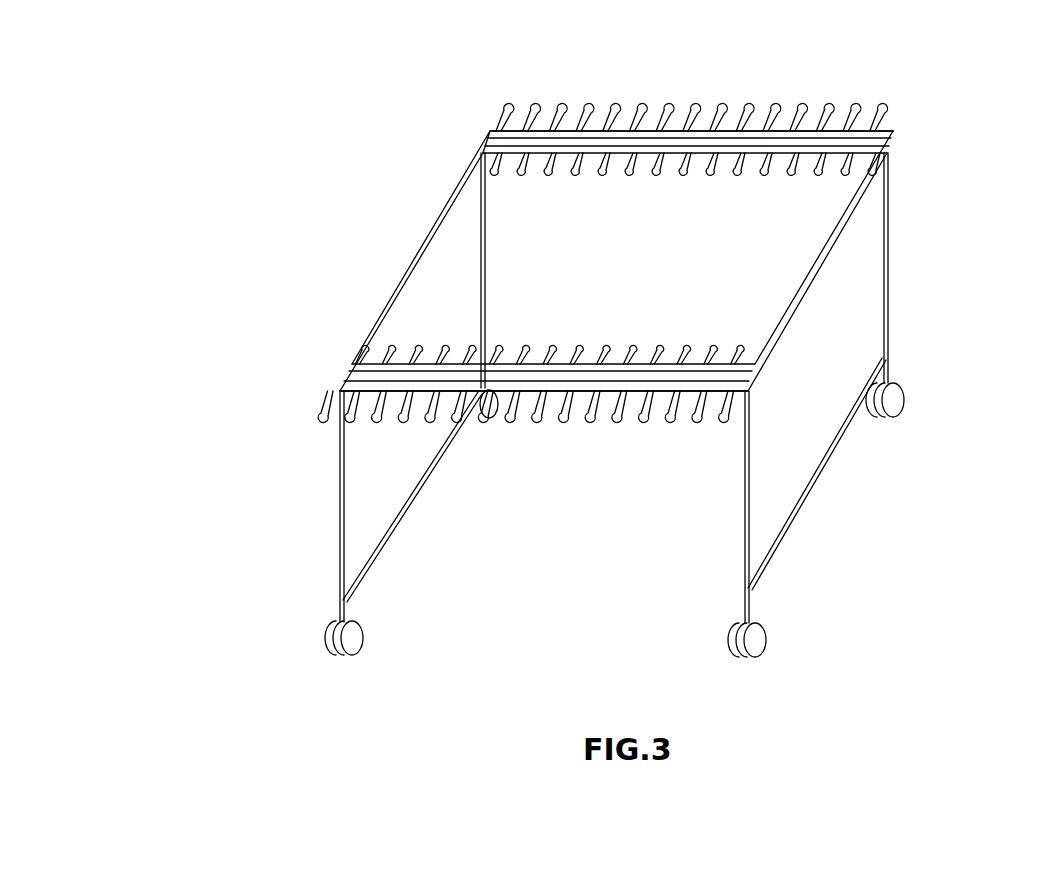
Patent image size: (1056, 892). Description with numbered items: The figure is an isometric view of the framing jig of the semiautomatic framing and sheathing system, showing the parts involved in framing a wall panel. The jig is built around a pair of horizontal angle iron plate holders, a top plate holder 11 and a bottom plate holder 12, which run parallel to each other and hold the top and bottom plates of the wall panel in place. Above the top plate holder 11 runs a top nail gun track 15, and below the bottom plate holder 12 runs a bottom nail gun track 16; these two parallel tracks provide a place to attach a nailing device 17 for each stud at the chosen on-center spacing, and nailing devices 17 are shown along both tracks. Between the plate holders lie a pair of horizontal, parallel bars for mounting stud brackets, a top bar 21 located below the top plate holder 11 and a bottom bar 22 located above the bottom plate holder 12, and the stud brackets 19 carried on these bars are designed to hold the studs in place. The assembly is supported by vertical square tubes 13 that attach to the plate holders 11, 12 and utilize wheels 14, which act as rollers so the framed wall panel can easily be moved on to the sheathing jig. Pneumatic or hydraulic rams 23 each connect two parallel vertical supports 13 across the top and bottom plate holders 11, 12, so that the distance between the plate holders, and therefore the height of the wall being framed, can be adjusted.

The top plate holder 11 is at (485, 142).
The bottom plate holder 12 is at (347, 373).
The vertical square tube 13 is at (888, 265).
The wheel 14 is at (898, 400).
The top nail gun track 15 is at (488, 128).
The bottom nail gun track 16 is at (337, 392).
The nailing device 17 is at (660, 110).
The stud bracket 19 is at (628, 352).
The top bar 21 is at (476, 153).
The bottom bar 22 is at (357, 363).
The pneumatic or hydraulic ram 23 is at (797, 500).